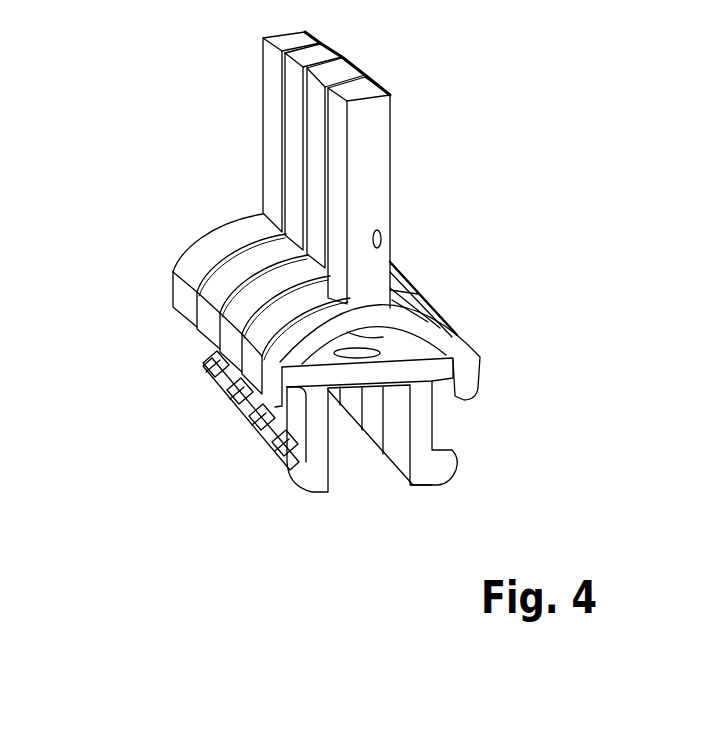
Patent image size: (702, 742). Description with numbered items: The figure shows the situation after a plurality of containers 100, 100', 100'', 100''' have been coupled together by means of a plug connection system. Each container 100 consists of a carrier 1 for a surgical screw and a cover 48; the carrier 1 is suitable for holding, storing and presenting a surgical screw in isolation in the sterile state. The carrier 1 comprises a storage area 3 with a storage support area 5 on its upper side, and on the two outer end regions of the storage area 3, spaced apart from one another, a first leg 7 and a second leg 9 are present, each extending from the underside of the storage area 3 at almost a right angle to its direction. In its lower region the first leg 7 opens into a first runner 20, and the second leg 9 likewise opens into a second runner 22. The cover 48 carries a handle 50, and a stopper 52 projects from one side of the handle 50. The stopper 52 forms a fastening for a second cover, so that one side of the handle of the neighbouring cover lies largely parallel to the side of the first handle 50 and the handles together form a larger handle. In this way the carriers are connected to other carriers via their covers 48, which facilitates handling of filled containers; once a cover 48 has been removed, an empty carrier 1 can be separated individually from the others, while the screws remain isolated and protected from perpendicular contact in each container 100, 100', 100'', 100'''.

The carrier 1 is at (433, 498).
The storage area 3 is at (398, 372).
The arched top with hole 5 is at (415, 351).
The first leg 7 is at (273, 453).
The second leg 9 is at (427, 417).
The first runner 20 is at (312, 478).
The second runner 22 is at (430, 477).
The cover 48 is at (200, 158).
The handle 50 is at (277, 80).
The stopper 52 is at (383, 241).
The container 100 is at (225, 456).
The container 100' is at (201, 428).
The container 100'' is at (178, 401).
The container 100''' is at (153, 368).